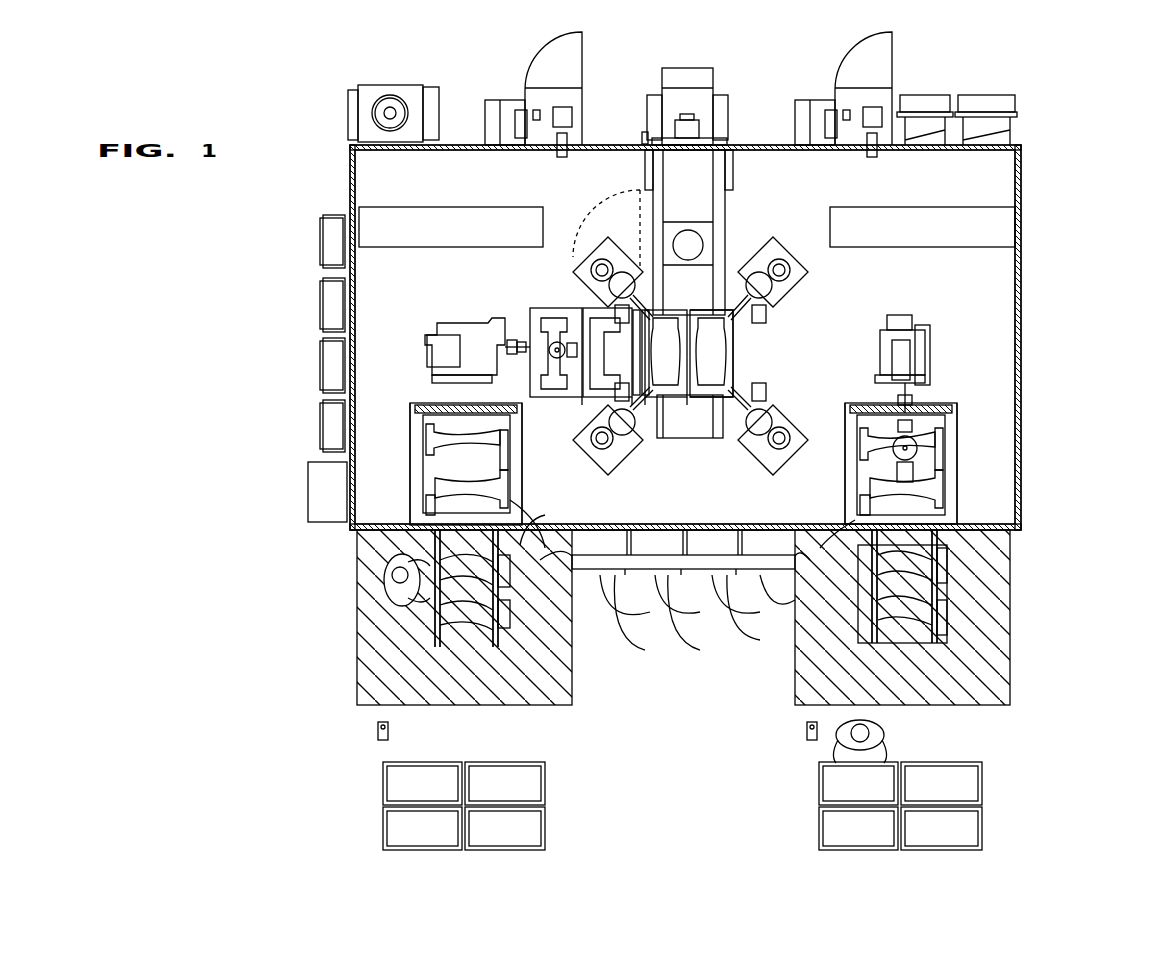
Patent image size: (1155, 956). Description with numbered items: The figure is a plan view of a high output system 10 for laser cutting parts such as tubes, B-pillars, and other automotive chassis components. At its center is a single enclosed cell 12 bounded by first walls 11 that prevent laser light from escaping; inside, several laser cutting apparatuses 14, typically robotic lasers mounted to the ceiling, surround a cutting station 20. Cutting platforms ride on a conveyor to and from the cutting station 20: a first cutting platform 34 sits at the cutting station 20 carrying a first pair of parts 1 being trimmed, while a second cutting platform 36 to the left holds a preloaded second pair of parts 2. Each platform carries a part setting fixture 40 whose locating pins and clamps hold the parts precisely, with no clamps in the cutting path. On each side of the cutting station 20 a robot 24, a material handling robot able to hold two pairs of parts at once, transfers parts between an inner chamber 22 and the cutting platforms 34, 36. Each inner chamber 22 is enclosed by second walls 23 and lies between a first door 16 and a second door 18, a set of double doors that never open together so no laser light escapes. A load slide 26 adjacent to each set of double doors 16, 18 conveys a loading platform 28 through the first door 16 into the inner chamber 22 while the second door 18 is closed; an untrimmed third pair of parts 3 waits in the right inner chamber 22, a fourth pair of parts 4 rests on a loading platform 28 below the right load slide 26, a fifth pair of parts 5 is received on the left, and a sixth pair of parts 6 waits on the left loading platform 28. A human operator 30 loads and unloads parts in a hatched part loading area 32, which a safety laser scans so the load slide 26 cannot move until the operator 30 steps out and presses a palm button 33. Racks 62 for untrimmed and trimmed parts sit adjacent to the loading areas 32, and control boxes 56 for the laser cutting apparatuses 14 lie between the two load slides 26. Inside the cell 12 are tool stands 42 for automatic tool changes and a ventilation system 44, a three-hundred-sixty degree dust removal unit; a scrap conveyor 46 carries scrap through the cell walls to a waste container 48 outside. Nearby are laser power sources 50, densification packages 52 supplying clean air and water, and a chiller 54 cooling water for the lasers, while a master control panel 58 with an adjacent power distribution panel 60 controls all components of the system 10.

The high output system 10 is at (1075, 78).
The first walls 11 is at (612, 145).
The enclosed cell 12 is at (1024, 242).
The first pair of parts 1 is at (670, 325).
The second pair of parts 2 is at (540, 318).
The third pair of parts 3 is at (860, 465).
The fourth pair of parts 4 is at (960, 565).
The fifth pair of parts 5 is at (460, 440).
The sixth pair of parts 6 is at (540, 620).
The laser cutting apparatus 14 is at (610, 283).
The first door 16 is at (520, 545).
The second door 18 is at (432, 405).
The cutting station 20 is at (740, 343).
The inner chamber 22 is at (410, 470).
The second walls 23 is at (412, 420).
The robot 24 is at (437, 330).
The load slide 26 is at (555, 545).
The loading platform 28 is at (432, 483).
The human operator 30 is at (395, 580).
The part loading area 32 is at (572, 680).
The palm button 33 is at (390, 730).
The first cutting platform 34 is at (738, 360).
The second cutting platform 36 is at (545, 325).
The part setting fixture 40 is at (533, 394).
The tool stands 42 is at (470, 207).
The ventilation system 44 is at (585, 222).
The scrap conveyor 46 is at (705, 230).
The waste container 48 is at (713, 80).
The laser power sources 50 is at (545, 58).
The densification packages 52 is at (962, 95).
The chiller 54 is at (390, 85).
The control boxes 56 is at (620, 600).
The master control panel 58 is at (308, 495).
The power distribution panel 60 is at (320, 302).
The racks 62 is at (383, 772).